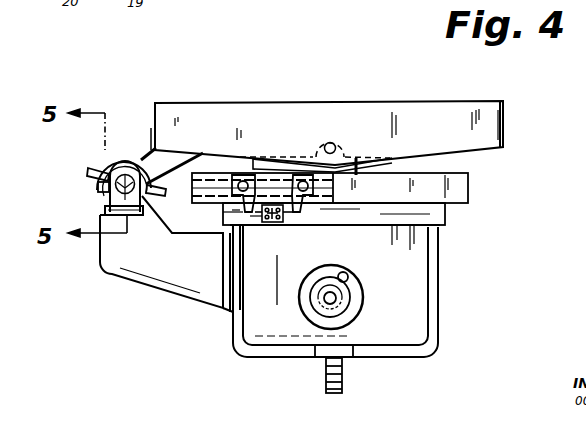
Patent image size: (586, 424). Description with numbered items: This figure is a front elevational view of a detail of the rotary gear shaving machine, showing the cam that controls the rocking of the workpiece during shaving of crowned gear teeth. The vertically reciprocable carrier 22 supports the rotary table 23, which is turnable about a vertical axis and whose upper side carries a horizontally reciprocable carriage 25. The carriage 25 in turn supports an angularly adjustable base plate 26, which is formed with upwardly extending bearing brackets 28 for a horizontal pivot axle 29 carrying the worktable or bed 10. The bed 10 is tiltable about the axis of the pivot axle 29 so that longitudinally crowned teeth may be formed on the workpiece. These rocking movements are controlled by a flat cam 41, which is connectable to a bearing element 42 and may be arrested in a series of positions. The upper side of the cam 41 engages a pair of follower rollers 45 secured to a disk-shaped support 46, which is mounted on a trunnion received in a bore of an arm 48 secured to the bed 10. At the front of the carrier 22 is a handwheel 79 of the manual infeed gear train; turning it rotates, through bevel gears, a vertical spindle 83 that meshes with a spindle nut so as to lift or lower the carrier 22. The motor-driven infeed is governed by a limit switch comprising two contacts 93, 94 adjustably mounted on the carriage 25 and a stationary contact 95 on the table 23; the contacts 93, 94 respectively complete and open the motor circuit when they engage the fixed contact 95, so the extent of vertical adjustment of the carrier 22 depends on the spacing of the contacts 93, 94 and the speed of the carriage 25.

The worktable or bed 10 is at (277, 115).
The carrier 22 is at (405, 310).
The rotary table 23 is at (447, 212).
The carriage 25 is at (457, 182).
The base plate 26 is at (392, 167).
The bearing brackets 28 is at (322, 143).
The pivot axle 29 is at (334, 152).
The cam 41 is at (88, 174).
The bearing element 42 is at (107, 204).
The follower rollers 45 is at (133, 160).
The disk-shaped support 46 is at (110, 167).
The arm 48 is at (150, 143).
The handwheel 79 is at (355, 290).
The vertical spindle 83 is at (343, 368).
The contact 93 is at (247, 217).
The contact 94 is at (297, 214).
The stationary contact 95 is at (272, 223).